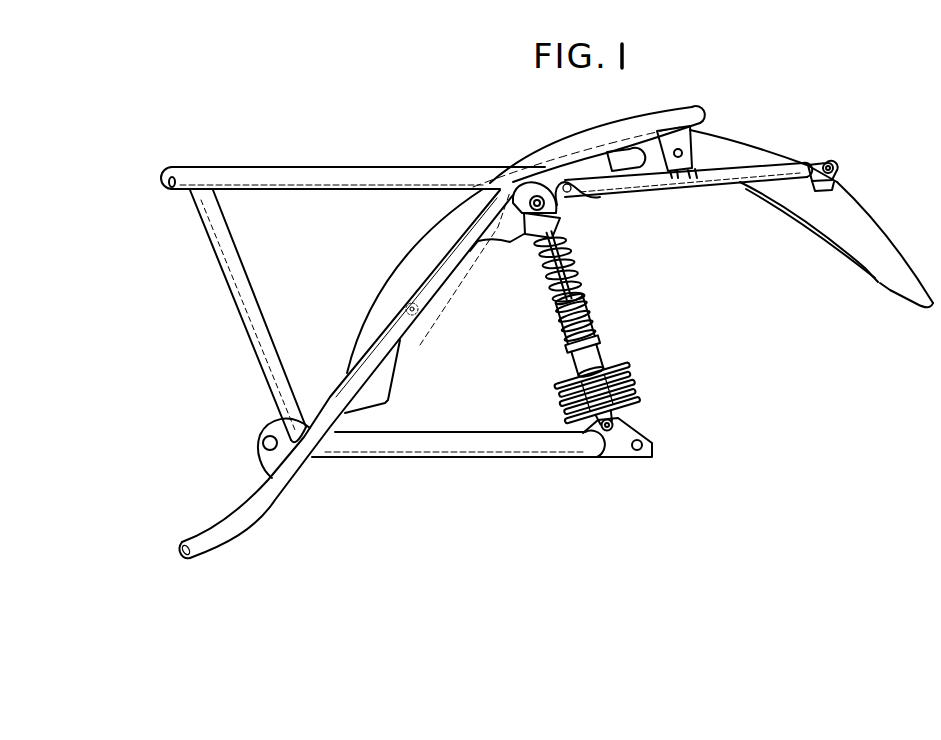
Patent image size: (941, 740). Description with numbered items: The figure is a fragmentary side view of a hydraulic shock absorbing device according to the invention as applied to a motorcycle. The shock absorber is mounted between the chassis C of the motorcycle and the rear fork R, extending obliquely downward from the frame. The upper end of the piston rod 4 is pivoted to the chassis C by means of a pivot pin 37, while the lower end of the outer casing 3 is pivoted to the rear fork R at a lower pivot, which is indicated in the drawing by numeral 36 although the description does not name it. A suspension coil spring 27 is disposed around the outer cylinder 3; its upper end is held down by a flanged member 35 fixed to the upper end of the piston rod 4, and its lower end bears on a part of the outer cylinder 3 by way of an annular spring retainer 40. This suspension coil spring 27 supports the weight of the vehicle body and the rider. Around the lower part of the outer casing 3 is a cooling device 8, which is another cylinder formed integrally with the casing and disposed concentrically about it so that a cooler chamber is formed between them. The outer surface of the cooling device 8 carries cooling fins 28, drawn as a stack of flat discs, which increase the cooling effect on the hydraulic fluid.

The chassis C is at (376, 176).
The pivot pin 37 is at (530, 197).
The flanged member 35 is at (563, 219).
The piston rod 4 is at (547, 258).
The suspension coil spring 27 is at (574, 266).
The outer casing 3 is at (588, 306).
The annular spring retainer 40 is at (592, 341).
The cooling device 8 is at (630, 367).
The cooling fins 28 is at (628, 382).
The lower pivot pin 36 is at (620, 422).
The rear fork R is at (444, 447).